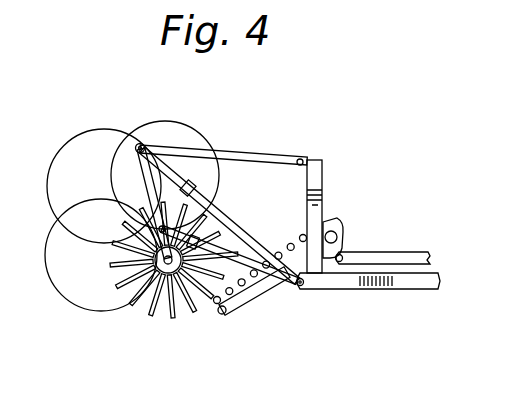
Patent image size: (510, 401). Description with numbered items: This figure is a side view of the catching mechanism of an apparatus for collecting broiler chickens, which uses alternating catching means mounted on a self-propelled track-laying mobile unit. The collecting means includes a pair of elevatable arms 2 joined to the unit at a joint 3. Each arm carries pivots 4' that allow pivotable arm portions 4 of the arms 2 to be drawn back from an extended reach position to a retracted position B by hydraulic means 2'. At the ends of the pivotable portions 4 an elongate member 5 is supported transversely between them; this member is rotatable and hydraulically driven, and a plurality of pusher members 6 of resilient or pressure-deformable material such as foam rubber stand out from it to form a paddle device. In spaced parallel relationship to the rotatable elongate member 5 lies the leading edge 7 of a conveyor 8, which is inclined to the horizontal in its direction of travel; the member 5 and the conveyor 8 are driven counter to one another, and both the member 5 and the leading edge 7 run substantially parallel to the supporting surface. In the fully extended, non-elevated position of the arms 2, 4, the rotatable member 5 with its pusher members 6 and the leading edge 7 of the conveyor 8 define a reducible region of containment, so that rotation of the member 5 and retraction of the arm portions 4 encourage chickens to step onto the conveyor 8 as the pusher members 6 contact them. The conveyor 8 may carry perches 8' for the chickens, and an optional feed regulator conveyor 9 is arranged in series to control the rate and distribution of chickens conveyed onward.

The elevatable arms 2 is at (224, 135).
The hydraulic means 2' is at (223, 241).
The joint of arms to unit 3 is at (300, 158).
The pivotable arm portions 4 is at (131, 203).
The pivots 4' is at (126, 118).
The elongate member 5 is at (162, 315).
The pusher members 6 is at (120, 289).
The leading edge of conveyor 7 is at (216, 314).
The conveyor 8 is at (256, 324).
The perches 8' is at (325, 208).
The feed regulator conveyor 9 is at (398, 257).
The retracted position B is at (260, 303).